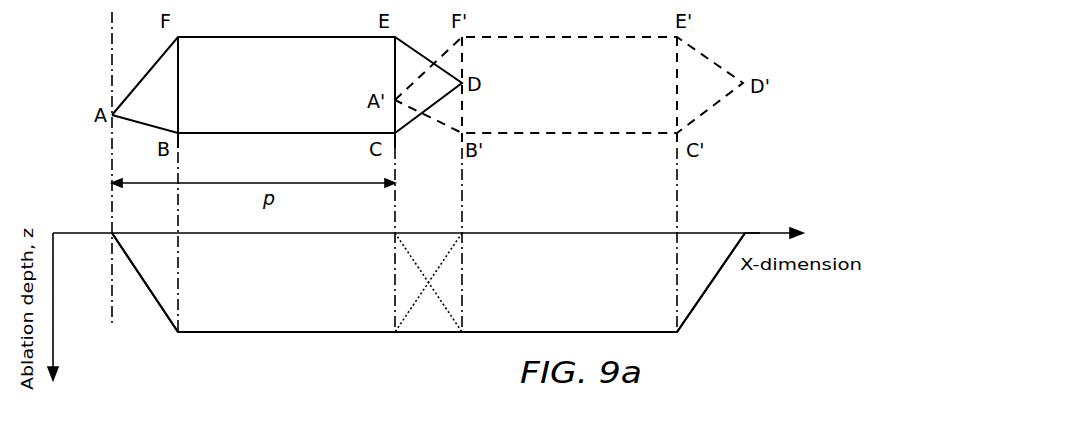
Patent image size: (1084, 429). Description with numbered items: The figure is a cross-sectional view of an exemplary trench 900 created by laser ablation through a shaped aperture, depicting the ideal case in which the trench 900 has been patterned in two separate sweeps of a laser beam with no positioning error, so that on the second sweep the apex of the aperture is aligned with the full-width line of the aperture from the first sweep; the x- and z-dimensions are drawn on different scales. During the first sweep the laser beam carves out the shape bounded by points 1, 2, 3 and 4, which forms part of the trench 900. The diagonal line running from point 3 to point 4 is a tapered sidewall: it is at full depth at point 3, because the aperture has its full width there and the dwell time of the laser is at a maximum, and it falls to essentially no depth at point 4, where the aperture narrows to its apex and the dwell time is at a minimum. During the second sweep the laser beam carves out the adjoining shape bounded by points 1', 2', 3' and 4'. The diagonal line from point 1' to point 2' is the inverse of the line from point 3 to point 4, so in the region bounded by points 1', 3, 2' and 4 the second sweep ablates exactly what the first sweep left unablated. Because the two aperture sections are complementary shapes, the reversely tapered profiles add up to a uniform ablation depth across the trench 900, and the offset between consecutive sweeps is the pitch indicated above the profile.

The trench 900 is at (328, 333).
The corner point of first-sweep shape 1 is at (136, 271).
The corner point of first-sweep shape 2 is at (278, 349).
The full-depth point of tapered sidewall 3 is at (418, 349).
The zero-depth point of tapered sidewall 4 is at (438, 271).
The corner point of second-sweep shape 1' is at (418, 271).
The corner point of second-sweep shape 2' is at (569, 349).
The corner point of second-sweep shape 3' is at (711, 299).
The corner point of second-sweep shape 4' is at (755, 222).